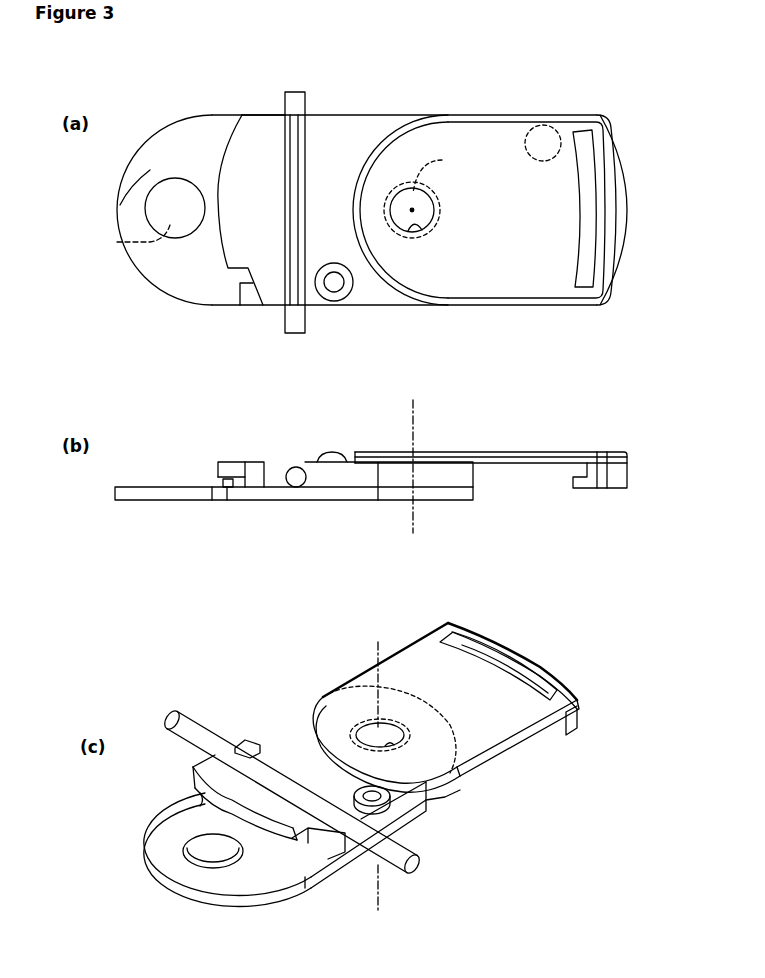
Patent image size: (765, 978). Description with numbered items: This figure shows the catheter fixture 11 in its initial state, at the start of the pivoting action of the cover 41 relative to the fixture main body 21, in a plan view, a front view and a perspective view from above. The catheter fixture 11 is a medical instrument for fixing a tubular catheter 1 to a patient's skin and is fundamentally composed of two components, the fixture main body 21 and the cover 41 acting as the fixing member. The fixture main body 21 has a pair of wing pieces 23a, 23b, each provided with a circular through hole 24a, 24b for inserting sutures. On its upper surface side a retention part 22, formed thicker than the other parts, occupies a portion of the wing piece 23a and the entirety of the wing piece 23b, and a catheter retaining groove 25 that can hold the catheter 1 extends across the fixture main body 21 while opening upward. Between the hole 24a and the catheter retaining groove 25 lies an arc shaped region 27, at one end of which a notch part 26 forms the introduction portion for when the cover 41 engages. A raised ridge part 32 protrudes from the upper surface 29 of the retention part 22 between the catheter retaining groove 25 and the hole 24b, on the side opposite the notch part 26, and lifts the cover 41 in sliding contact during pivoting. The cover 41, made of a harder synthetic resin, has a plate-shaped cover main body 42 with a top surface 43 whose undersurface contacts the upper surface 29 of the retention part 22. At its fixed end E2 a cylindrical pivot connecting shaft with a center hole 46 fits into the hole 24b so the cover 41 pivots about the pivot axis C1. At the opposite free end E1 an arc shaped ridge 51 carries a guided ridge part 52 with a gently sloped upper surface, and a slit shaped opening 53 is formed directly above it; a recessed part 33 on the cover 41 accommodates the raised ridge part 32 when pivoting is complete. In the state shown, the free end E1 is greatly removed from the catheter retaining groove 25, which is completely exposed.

The catheter 1 is at (307, 100).
The catheter fixture 11 is at (123, 117).
The fixture main body 21 is at (158, 122).
The retention part 22 is at (260, 130).
The wing piece 23a is at (118, 190).
The wing piece 23b is at (372, 122).
The hole 24a is at (148, 240).
The hole 24b is at (452, 172).
The catheter retaining groove 25 is at (293, 205).
The notch part 26 is at (247, 290).
The arc shaped region 27 is at (222, 170).
The upper surface 29 is at (266, 231).
The raised ridge part 32 is at (340, 300).
The recessed part 33 is at (543, 128).
The cover 41 is at (505, 115).
The cover main body 42 is at (520, 277).
The top surface 43 is at (523, 241).
The center hole 46 is at (420, 228).
The arc shaped ridge 51 is at (615, 248).
The guided ridge part 52 is at (596, 170).
The slit shaped opening 53 is at (600, 235).
The pivot axis C1 is at (414, 210).
The free end E1 is at (622, 150).
The fixed end E2 is at (352, 207).